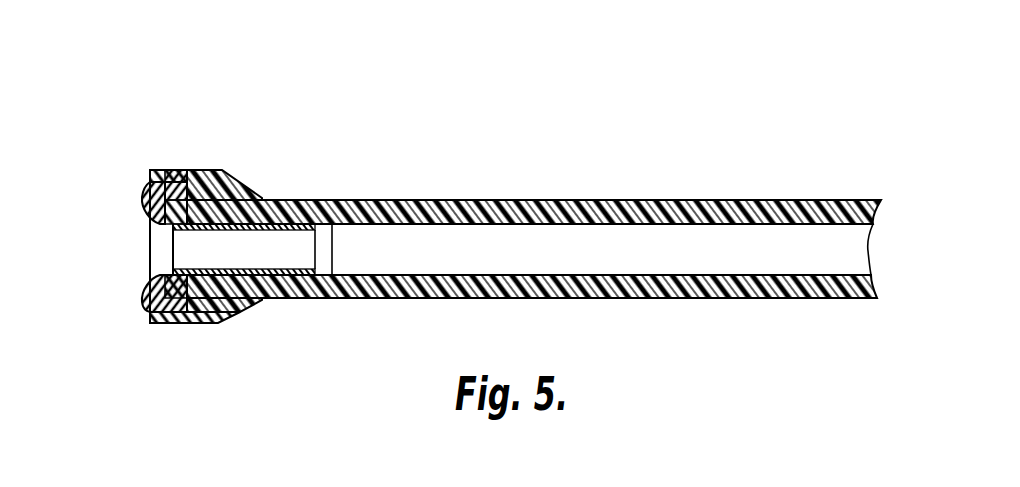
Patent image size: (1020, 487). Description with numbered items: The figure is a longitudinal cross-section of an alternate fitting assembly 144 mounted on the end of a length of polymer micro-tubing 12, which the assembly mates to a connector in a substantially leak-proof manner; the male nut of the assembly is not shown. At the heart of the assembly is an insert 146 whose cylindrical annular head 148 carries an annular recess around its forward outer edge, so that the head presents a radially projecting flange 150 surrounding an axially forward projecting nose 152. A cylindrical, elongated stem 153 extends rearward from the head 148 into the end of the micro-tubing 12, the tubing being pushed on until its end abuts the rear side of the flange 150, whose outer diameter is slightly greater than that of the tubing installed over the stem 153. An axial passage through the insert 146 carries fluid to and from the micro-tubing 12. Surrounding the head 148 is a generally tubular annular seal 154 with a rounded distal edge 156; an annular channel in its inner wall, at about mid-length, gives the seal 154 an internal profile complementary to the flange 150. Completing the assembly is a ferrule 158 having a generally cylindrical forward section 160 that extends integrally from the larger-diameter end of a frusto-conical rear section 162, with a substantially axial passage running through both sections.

The fitting assembly 144 is at (158, 86).
The polymer micro-tubing 12 is at (848, 212).
The insert 146 is at (229, 265).
The annular head 148 is at (163, 235).
The flange 150 is at (180, 300).
The nose 152 is at (147, 212).
The stem 153 is at (303, 224).
The annular seal 154 is at (178, 168).
The rounded distal edge 156 is at (144, 189).
The ferrule 158 is at (228, 324).
The forward section 160 is at (148, 170).
The rear section 162 is at (258, 187).